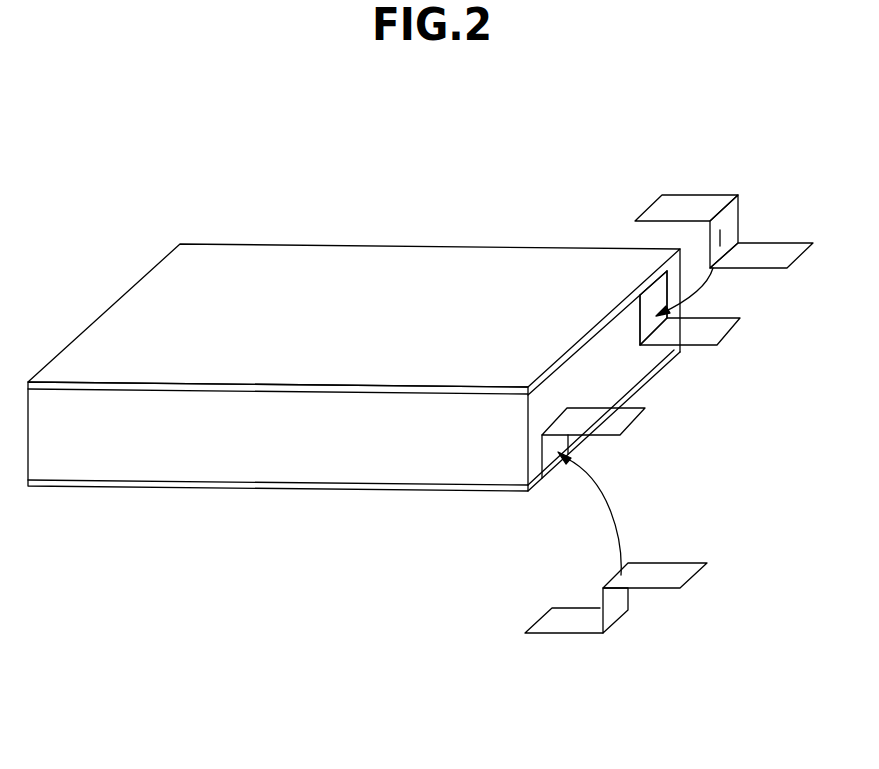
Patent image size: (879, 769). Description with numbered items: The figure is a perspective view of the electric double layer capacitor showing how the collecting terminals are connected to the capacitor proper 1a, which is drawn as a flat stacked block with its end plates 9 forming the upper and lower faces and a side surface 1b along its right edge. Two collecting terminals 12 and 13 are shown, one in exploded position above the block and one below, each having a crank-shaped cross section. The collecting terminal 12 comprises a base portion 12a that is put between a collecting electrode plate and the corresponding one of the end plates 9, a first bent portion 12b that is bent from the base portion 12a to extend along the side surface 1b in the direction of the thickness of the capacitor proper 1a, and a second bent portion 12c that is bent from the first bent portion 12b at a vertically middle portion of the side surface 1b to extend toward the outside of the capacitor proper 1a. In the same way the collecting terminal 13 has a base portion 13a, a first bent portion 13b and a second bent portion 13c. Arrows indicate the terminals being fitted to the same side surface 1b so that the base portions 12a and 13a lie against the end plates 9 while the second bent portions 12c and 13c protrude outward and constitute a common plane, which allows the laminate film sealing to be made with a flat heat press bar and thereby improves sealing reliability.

The capacitor proper 1a is at (430, 213).
The side surface 1b is at (637, 372).
The end plate 9 is at (43, 383).
The collecting terminal 12 is at (745, 206).
The base portion 12a is at (695, 205).
The first bent portion 12b is at (733, 220).
The second bent portion 12c is at (772, 255).
The collecting terminal 13 is at (621, 581).
The base portion 13a is at (568, 637).
The first bent portion 13b is at (610, 602).
The second bent portion 13c is at (610, 420).